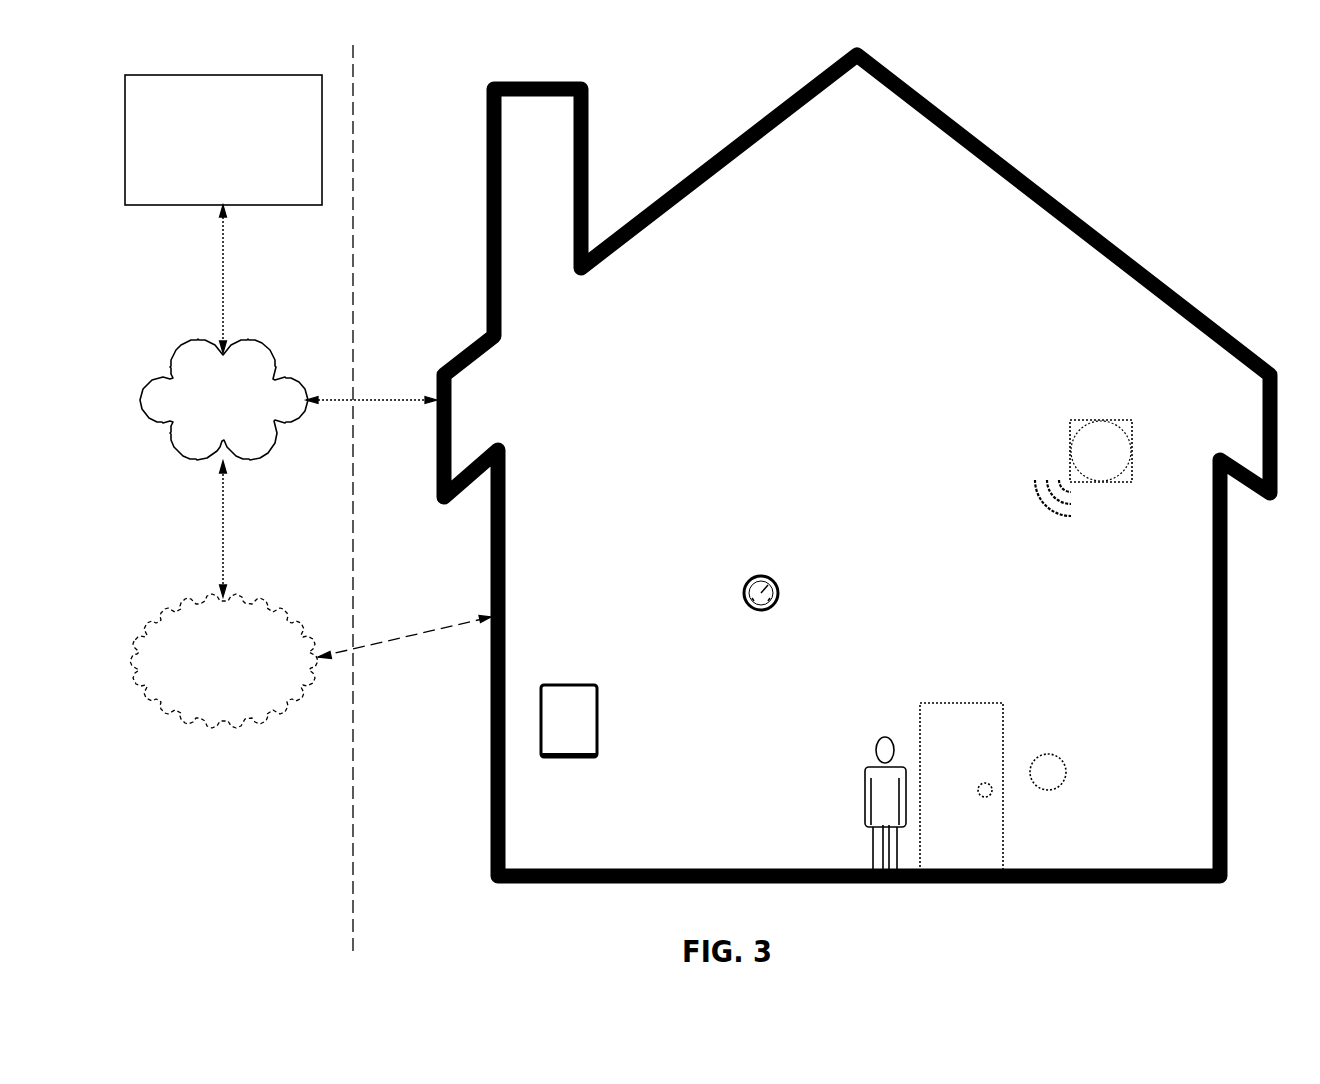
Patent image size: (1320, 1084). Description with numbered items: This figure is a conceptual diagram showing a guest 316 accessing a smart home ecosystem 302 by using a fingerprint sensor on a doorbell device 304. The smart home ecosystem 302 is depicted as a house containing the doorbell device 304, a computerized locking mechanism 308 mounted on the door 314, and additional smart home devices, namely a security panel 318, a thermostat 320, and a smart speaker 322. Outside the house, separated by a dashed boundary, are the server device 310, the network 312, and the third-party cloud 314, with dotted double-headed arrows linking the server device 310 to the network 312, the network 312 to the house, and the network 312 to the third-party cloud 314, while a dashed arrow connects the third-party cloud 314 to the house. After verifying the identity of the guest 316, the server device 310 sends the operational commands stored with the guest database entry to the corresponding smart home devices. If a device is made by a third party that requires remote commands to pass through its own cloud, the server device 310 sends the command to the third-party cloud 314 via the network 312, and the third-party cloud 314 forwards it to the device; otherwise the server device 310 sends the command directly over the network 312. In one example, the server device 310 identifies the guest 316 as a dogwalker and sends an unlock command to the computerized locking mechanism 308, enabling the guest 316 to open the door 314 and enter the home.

The smart home ecosystem 302 is at (1219, 78).
The doorbell device 304 is at (1064, 759).
The computerized locking mechanism 308 is at (986, 783).
The server device 310 is at (223, 140).
The network 312 is at (224, 399).
The third-party cloud 314 is at (1000, 690).
The guest 316 is at (880, 740).
The security panel 318 is at (597, 686).
The thermostat 320 is at (758, 576).
The smart speaker 322 is at (1100, 420).